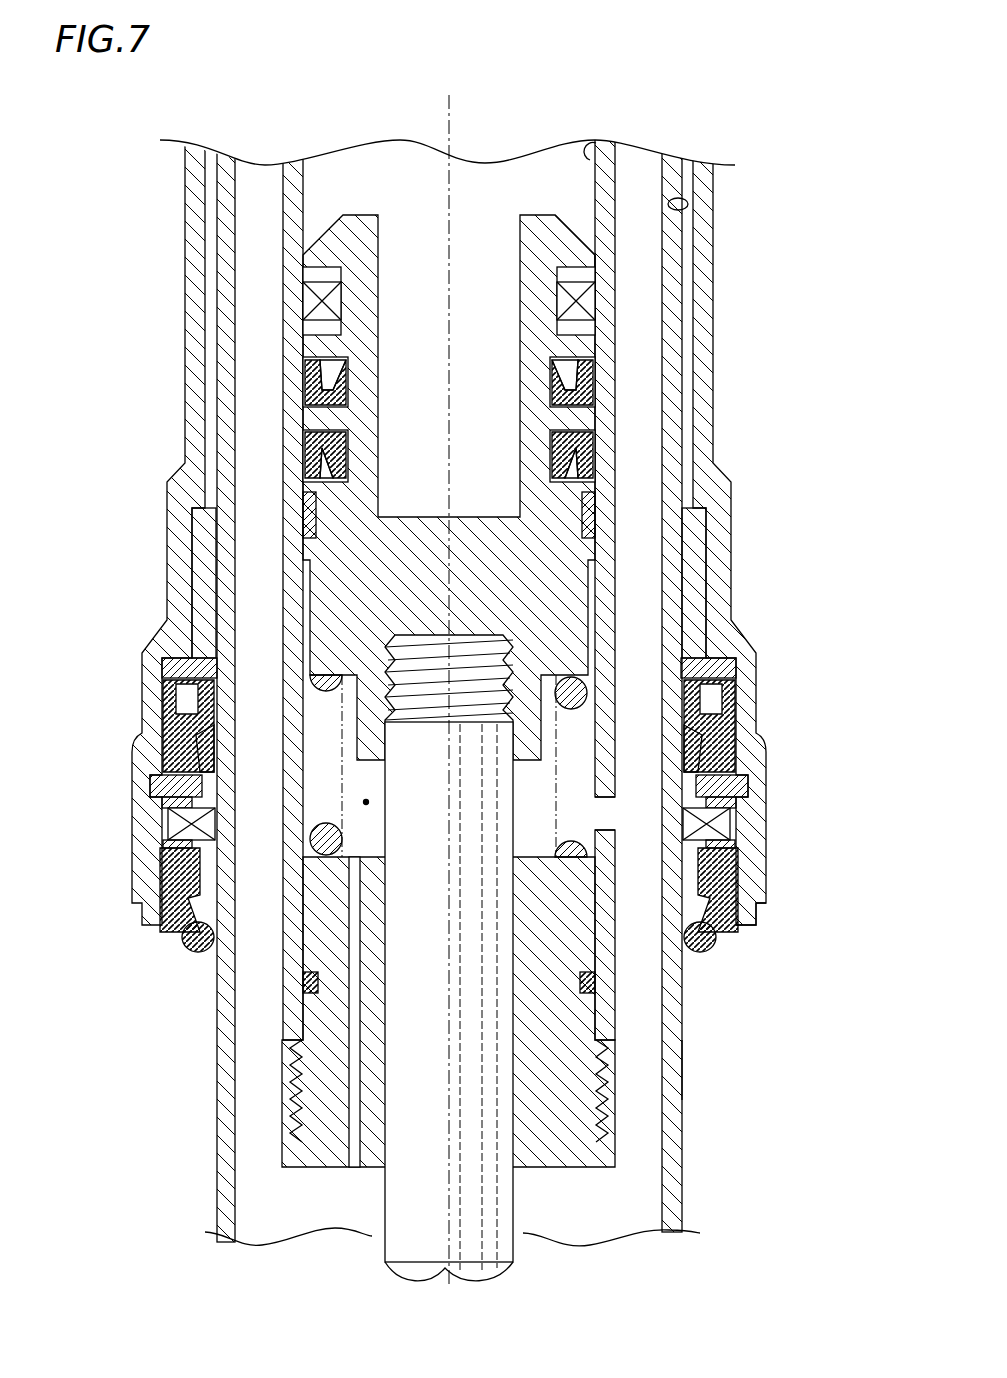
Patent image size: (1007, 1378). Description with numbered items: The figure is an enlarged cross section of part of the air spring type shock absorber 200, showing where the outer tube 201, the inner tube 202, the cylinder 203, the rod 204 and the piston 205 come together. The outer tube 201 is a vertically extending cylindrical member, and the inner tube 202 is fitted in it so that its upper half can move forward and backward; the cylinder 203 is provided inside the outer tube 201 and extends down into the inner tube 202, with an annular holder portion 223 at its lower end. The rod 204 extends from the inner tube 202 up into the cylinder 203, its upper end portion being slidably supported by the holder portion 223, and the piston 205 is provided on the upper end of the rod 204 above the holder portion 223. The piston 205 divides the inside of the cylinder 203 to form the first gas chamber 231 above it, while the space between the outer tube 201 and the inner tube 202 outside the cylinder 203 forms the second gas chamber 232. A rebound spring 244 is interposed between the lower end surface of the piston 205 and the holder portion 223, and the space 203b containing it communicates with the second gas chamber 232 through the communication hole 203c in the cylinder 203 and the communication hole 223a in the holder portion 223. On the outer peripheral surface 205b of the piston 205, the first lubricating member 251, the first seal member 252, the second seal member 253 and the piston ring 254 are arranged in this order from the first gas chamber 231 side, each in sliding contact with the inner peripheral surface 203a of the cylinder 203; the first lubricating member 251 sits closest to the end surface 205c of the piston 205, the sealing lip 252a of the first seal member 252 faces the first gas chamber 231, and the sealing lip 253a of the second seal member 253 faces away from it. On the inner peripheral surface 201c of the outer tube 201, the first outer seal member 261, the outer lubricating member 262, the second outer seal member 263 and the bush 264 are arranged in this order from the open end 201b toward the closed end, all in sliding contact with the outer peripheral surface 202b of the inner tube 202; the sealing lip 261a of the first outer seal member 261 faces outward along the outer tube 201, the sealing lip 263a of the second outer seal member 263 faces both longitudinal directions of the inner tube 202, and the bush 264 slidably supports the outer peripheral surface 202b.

The air spring type shock absorber 200 is at (770, 162).
The outer tube 201 is at (183, 313).
The open end of outer tube 201b is at (762, 906).
The inner peripheral surface of outer tube 201c is at (686, 207).
The inner tube 202 is at (216, 1091).
The outer peripheral surface of inner tube 202b is at (684, 1073).
The cylinder 203 is at (282, 995).
The inner peripheral surface of cylinder 203a is at (596, 143).
The space 203b is at (366, 802).
The communication hole 203c is at (608, 817).
The rod 204 is at (407, 1242).
The piston 205 is at (368, 580).
The outer peripheral surface of piston 205b is at (596, 267).
The end surface of piston 205c is at (530, 214).
The holder portion 223 is at (308, 1152).
The communication hole 223a is at (352, 1168).
The gas chamber 231 is at (414, 191).
The gas chamber 232 is at (608, 1219).
The rebound spring 244 is at (308, 842).
The first lubricating member 251 is at (582, 300).
The first seal member 252 is at (593, 390).
The sealing lip 252a is at (590, 370).
The second seal member 253 is at (590, 430).
The sealing lip 253a is at (590, 478).
The piston ring 254 is at (590, 515).
The first outer seal member 261 is at (735, 873).
The sealing lip 261a is at (700, 953).
The outer lubricating member 262 is at (724, 820).
The second outer seal member 263 is at (735, 720).
The sealing lip 263a is at (733, 762).
The bush 264 is at (700, 562).